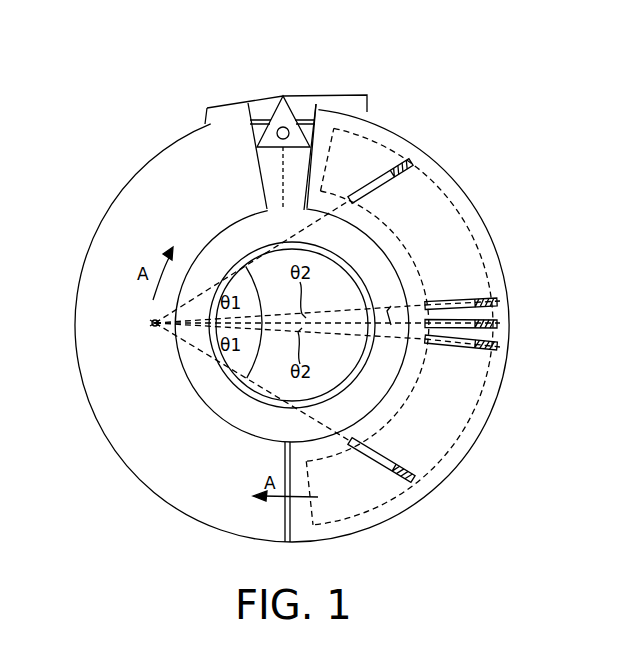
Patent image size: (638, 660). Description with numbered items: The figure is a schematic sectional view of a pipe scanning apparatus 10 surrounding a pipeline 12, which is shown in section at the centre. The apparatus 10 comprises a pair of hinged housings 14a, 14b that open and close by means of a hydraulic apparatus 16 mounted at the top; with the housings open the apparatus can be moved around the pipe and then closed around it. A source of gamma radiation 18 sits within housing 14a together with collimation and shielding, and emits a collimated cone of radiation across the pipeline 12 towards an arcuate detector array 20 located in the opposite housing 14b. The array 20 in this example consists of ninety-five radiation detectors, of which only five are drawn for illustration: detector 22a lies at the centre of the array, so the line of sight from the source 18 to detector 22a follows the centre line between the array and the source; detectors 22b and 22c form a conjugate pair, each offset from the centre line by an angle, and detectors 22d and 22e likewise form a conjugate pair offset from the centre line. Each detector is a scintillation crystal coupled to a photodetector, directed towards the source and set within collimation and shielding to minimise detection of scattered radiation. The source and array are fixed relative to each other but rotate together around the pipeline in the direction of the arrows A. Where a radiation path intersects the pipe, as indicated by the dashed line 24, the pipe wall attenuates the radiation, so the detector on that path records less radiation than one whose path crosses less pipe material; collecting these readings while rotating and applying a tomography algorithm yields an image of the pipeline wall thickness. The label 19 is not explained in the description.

The pipe scanning apparatus 10 is at (426, 124).
The pipeline 12 is at (246, 388).
The hinged housing 14a is at (112, 445).
The hinged housing 14b is at (487, 420).
The hydraulic apparatus 16 is at (339, 100).
The source of gamma radiation 18 is at (153, 328).
The optical axis gap 19 is at (392, 305).
The detector array 20 is at (363, 500).
The detector 22a is at (500, 323).
The detector 22b is at (497, 299).
The detector 22c is at (496, 350).
The detector 22d is at (410, 172).
The detector 22e is at (416, 476).
The dashed line 24 is at (203, 354).